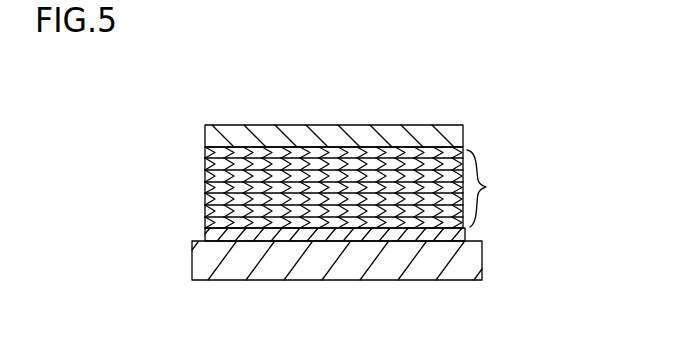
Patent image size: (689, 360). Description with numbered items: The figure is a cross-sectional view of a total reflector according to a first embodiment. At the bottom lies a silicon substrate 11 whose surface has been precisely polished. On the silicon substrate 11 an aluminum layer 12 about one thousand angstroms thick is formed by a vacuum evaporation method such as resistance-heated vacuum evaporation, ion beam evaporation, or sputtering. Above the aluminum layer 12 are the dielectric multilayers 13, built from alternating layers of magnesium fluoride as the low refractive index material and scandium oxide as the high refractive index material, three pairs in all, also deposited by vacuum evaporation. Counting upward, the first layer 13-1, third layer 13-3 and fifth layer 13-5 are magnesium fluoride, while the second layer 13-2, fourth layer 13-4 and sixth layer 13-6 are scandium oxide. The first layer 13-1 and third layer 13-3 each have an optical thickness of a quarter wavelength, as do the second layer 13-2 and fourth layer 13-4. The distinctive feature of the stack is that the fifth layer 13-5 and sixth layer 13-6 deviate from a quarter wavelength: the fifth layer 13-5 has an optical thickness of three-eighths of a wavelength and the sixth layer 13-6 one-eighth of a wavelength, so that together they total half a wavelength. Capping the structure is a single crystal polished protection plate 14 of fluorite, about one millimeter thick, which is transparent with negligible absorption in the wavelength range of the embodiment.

The silicon substrate 11 is at (460, 262).
The aluminum layer 12 is at (466, 231).
The dielectric multilayers 13 is at (488, 185).
The first layer 13-1 is at (205, 220).
The second layer 13-2 is at (205, 202).
The third layer 13-3 is at (205, 185).
The fourth layer 13-4 is at (205, 173).
The fifth layer 13-5 is at (205, 165).
The sixth layer 13-6 is at (205, 159).
The protection plate 14 is at (465, 129).